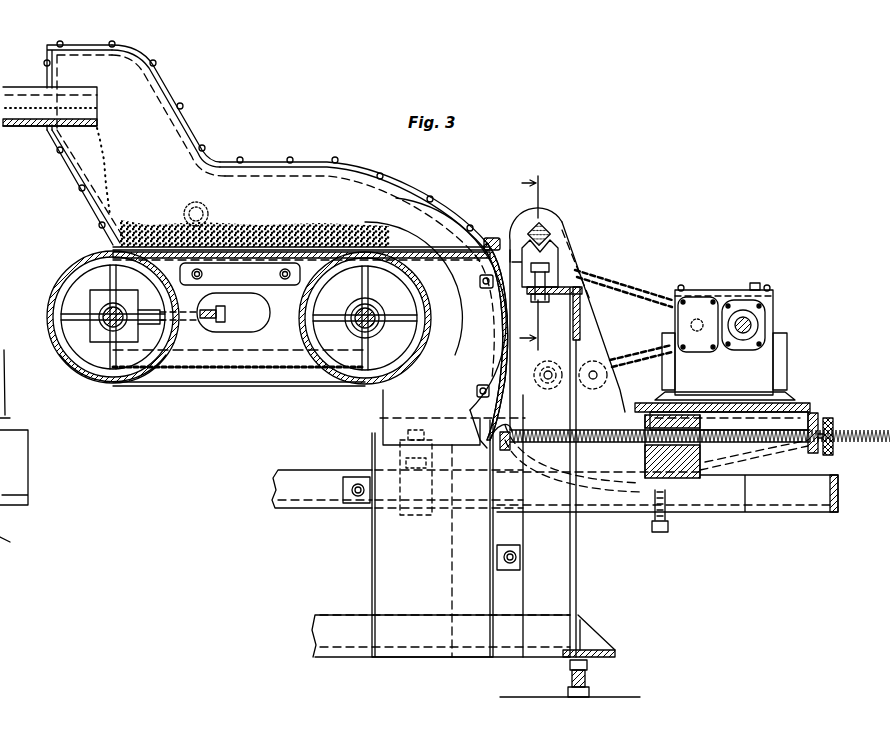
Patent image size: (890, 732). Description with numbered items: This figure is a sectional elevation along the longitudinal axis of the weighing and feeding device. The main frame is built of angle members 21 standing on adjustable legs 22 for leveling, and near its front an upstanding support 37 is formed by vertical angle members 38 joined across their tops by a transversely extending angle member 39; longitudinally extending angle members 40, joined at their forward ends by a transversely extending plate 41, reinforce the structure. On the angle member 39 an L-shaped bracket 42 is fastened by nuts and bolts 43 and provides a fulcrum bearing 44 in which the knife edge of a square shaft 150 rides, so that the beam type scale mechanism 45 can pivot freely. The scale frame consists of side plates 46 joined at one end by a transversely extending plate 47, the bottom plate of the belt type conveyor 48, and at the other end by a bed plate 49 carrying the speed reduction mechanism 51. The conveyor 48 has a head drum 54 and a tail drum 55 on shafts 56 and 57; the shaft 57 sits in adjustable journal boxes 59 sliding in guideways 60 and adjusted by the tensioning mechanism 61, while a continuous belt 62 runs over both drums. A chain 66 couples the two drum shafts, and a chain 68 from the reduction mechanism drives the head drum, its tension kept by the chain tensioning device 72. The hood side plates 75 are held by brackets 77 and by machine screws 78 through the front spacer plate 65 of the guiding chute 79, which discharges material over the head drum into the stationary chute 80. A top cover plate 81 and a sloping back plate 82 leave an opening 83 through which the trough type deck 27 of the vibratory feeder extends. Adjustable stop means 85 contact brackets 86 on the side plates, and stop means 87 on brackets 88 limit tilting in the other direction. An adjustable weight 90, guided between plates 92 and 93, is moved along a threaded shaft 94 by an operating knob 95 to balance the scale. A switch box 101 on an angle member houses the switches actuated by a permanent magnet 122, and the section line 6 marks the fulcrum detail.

The section line 6- 6 is at (535, 262).
The angle members 21 is at (600, 636).
The adjustable legs 22 is at (590, 679).
The trough type deck 27 is at (90, 105).
The upstanding support 37 is at (588, 532).
The vertical angle members 38 is at (578, 560).
The transversely extending angle member 39 is at (582, 315).
The longitudinally extending angle members 40 is at (283, 484).
The transversely extending plate 41 is at (840, 498).
The L-shaped bracket 42 is at (553, 278).
The nuts and bolts 43 is at (584, 300).
The fulcrum bearing 44 is at (560, 250).
The beam type scale mechanism 45 is at (577, 176).
The side plates 46 is at (247, 345).
The transversely extending plate 47 is at (252, 260).
The belt type conveyor 48 is at (167, 399).
The bed plate 49 is at (806, 404).
The speed reduction mechanism 51 is at (725, 341).
The head drum 54 is at (345, 372).
The tail drum 55 is at (124, 380).
The head drum shaft 56 is at (371, 309).
The tail drum shaft 57 is at (113, 330).
The adjustable journal boxes 59 is at (88, 332).
The guideways 60 is at (70, 318).
The belt tensioning and journal box adjusting mechanism 61 is at (214, 324).
The continuous belt 62 is at (82, 252).
The front spacer plate 65 is at (560, 352).
The chain 66 is at (190, 388).
The chain 68 is at (642, 282).
The adjustable chain tensioning device 72 is at (590, 396).
The hood side plates 75 is at (312, 185).
The brackets 77 is at (208, 210).
The machine screws 78 is at (481, 288).
The guiding chute 79 is at (390, 421).
The stationary chute 80 is at (372, 556).
The top cover plate 81 is at (270, 160).
The sloping back plate 82 is at (66, 162).
The opening 83 is at (47, 80).
The adjustable stop means 85 is at (670, 532).
The brackets 86 is at (668, 493).
The adjustable stop means 87 is at (406, 464).
The brackets 88 is at (400, 451).
The adjustable weight 90 is at (645, 456).
The transversely extending plate 92 is at (815, 420).
The transversely extending plate 93 is at (512, 446).
The threaded shaft 94 is at (770, 446).
The operating knob 95 is at (840, 430).
The switch box 101 is at (10, 542).
The permanent magnet 122 is at (18, 389).
The square shaft 150 is at (548, 235).